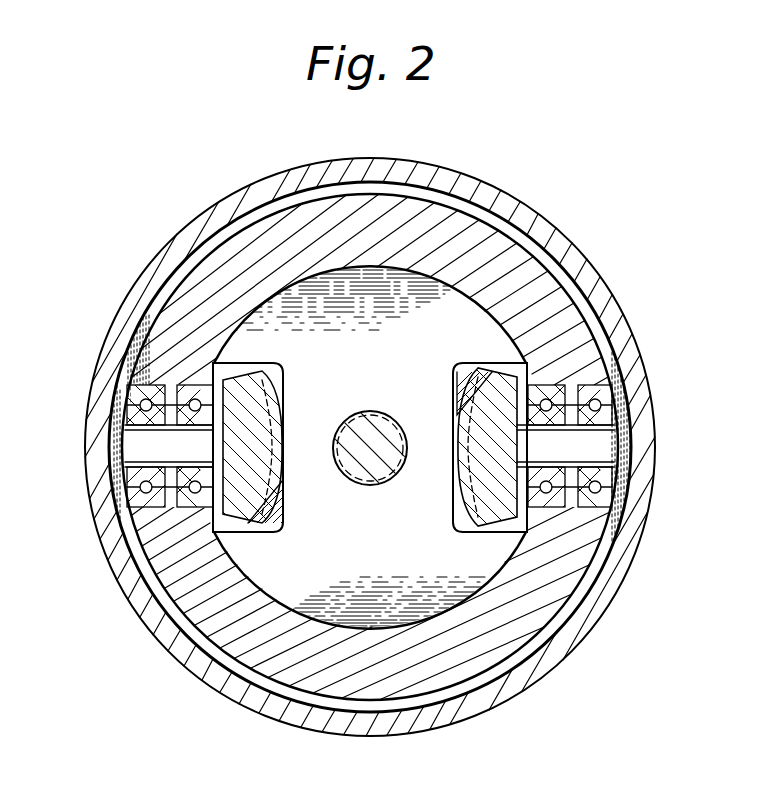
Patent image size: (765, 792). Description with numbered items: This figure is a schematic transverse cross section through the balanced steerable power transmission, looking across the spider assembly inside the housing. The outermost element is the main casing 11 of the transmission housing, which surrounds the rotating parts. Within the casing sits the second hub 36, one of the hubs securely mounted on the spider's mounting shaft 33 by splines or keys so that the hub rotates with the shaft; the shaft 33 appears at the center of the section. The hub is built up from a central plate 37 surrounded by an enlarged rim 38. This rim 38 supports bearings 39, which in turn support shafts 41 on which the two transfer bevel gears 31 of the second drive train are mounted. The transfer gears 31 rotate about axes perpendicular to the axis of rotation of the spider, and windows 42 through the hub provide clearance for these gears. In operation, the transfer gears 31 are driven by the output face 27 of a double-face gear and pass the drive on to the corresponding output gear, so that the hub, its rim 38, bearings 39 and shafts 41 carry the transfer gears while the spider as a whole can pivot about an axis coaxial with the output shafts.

The main casing 11 is at (538, 212).
The second hub 36 is at (538, 257).
The enlarged rim 38 is at (462, 653).
The central plate 37 is at (393, 598).
The windows 42 is at (233, 366).
The second pair of transfer bevel gears 31 is at (256, 420).
The output face 27 is at (472, 378).
The bearings 39 is at (188, 380).
The shafts 41 is at (147, 443).
The mounting shaft 33 is at (378, 437).